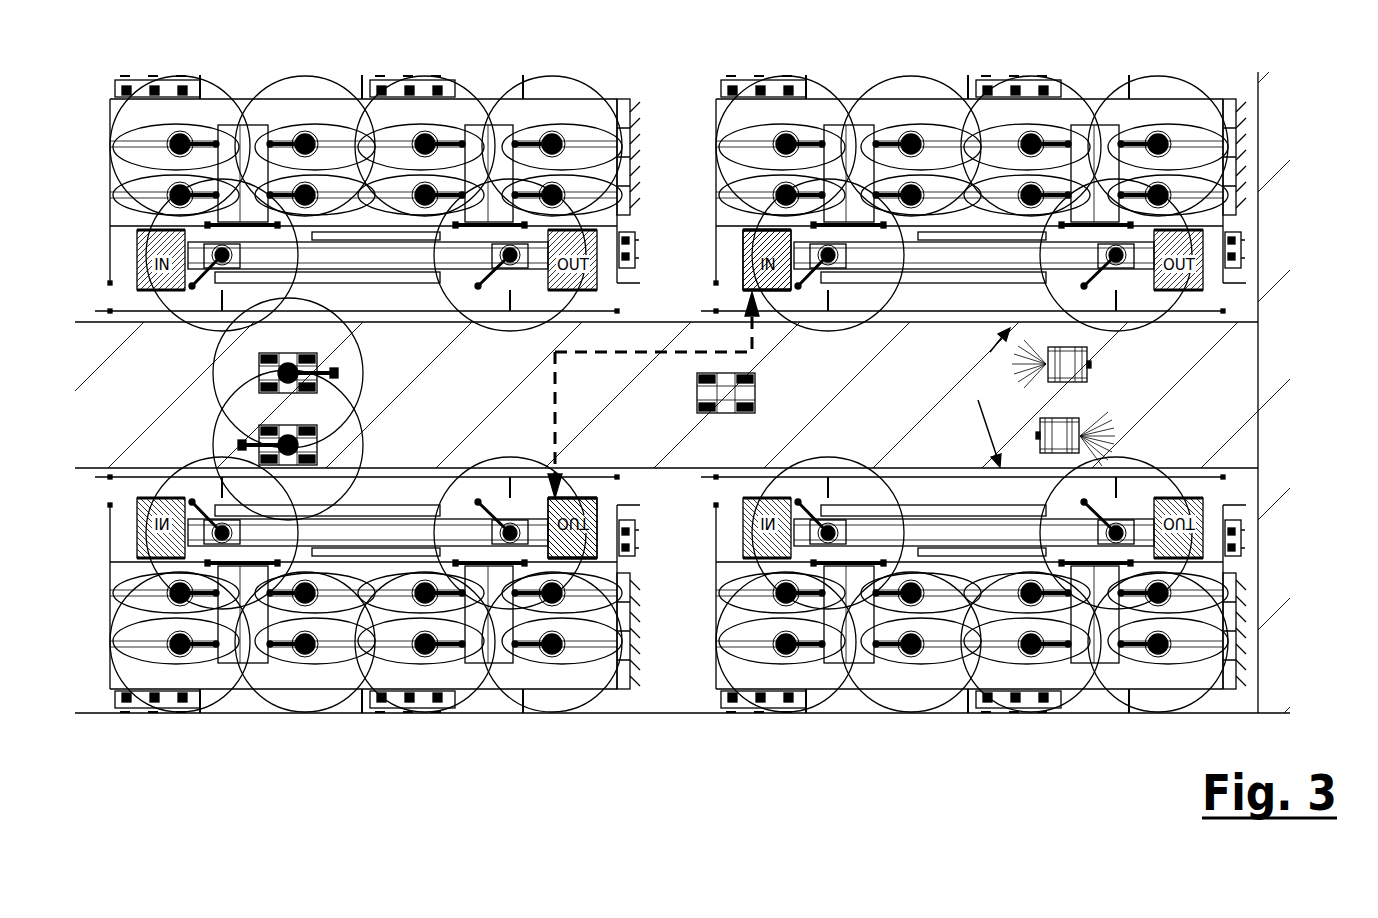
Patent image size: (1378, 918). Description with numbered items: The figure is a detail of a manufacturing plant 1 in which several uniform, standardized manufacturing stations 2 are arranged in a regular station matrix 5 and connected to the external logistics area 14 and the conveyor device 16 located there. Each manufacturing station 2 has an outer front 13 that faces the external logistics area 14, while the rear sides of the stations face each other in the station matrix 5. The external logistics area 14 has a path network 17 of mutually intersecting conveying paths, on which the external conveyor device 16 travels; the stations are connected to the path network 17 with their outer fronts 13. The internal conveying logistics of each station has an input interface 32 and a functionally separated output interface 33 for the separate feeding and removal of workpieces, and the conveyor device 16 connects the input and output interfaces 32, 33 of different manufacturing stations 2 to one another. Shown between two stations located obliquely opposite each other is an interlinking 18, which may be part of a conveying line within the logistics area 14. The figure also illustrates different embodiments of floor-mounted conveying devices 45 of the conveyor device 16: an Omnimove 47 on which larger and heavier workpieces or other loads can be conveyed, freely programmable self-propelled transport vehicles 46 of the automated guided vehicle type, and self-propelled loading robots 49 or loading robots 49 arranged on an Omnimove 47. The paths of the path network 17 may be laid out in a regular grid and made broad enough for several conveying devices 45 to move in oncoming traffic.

The manufacturing plant 1 is at (689, 443).
The station matrix 5 is at (710, 660).
The manufacturing station 2 is at (709, 392).
The outer front 13 is at (984, 397).
The external logistics area 14 is at (1187, 330).
The conveyor device 16 is at (1187, 330).
The path network 17 is at (1187, 362).
The interlinking 18 is at (552, 385).
The input interface 32 is at (738, 253).
The output interface 33 is at (583, 513).
The floor-mounted conveying device 45 is at (1013, 419).
The self-propelled transport vehicle 46 is at (1087, 430).
The Omnimove 47 is at (752, 392).
The loading robot 49 is at (265, 435).